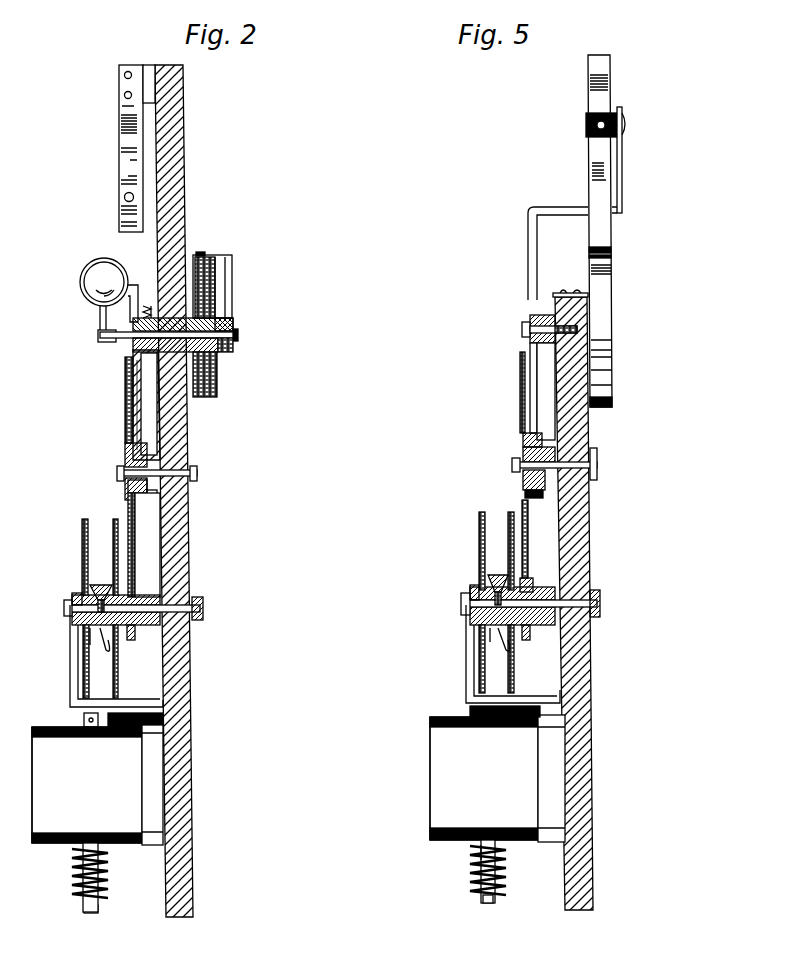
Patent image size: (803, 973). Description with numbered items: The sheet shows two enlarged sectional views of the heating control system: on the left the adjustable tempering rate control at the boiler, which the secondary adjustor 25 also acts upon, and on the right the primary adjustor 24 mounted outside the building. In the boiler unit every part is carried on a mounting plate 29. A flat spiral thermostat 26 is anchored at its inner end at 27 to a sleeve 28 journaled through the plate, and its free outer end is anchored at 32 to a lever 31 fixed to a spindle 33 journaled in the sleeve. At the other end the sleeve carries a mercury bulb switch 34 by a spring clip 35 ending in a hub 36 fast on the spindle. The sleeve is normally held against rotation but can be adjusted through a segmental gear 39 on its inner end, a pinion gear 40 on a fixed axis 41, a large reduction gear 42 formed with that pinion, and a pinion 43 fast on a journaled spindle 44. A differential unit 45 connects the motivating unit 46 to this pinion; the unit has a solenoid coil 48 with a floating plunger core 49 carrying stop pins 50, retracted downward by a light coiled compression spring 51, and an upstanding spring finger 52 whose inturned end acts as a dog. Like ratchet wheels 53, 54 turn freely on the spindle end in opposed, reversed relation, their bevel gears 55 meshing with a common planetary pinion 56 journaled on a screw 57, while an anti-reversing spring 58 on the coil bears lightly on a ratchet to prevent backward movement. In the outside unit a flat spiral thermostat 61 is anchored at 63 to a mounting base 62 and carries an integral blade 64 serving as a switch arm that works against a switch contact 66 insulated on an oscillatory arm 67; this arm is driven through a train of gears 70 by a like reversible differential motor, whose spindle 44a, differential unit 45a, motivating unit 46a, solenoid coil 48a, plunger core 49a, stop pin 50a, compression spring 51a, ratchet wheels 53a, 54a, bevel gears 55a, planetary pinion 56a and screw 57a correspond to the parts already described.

In FIG. 5, the primary adjustor 24 is at (502, 200).
In FIG. 2, the secondary adjustor 25 is at (215, 172).
In FIG. 2, the thermostat 26 is at (218, 383).
In FIG. 2, the inner end anchor 27 is at (218, 358).
In FIG. 2, the sleeve 28 is at (133, 350).
In FIG. 2, the mounting plate 29 is at (185, 720).
In FIG. 2, the lever 31 is at (228, 272).
In FIG. 2, the outer end anchor 32 is at (201, 255).
In FIG. 2, the spindle 33 is at (238, 335).
In FIG. 2, the mercury bulb switch 34 is at (100, 304).
In FIG. 2, the spring clip 35 is at (81, 288).
In FIG. 2, the hub 36 is at (133, 343).
In FIG. 2, the segmental gear 39 is at (137, 386).
In FIG. 2, the pinion gear 40 is at (125, 457).
In FIG. 2, the fixed axis 41 is at (186, 473).
In FIG. 2, the large reduction gear 42 is at (131, 582).
In FIG. 2, the pinion 43 is at (147, 545).
In FIG. 2, the spindle 44 is at (194, 604).
In FIG. 2, the differential unit 45 is at (71, 596).
In FIG. 2, the motivating unit 46 is at (97, 785).
In FIG. 2, the solenoid coil 48 is at (34, 826).
In FIG. 2, the plunger-like core 49 is at (78, 714).
In FIG. 2, the stop pin 50 is at (84, 720).
In FIG. 2, the coiled compression spring 51 is at (76, 872).
In FIG. 2, the spring finger 52 is at (83, 658).
In FIG. 2, the ratchet wheel 53 is at (82, 519).
In FIG. 2, the ratchet wheel 54 is at (116, 519).
In FIG. 2, the bevel gear 55 is at (104, 646).
In FIG. 2, the planetary pinion 56 is at (74, 598).
In FIG. 2, the screw 57 is at (102, 584).
In FIG. 2, the anti-reversing spring 58 is at (78, 684).
In FIG. 5, the thermostat 61 is at (602, 277).
In FIG. 5, the mounting base 62 is at (579, 431).
In FIG. 5, the anchor point 63 is at (563, 292).
In FIG. 5, the blade 64 is at (603, 74).
In FIG. 5, the switch contact 66 is at (588, 128).
In FIG. 5, the oscillatory arm 67 is at (622, 192).
In FIG. 5, the train of gears 70 is at (530, 434).
In FIG. 5, the spindle 44a is at (596, 604).
In FIG. 5, the differential unit 45a is at (470, 630).
In FIG. 5, the motivating unit 46a is at (497, 774).
In FIG. 5, the solenoid coil 48a is at (432, 822).
In FIG. 5, the plunger-like core 49a is at (480, 846).
In FIG. 5, the stop pin 50a is at (490, 905).
In FIG. 5, the coiled compression spring 51a is at (504, 866).
In FIG. 5, the ratchet wheel 53a is at (479, 530).
In FIG. 5, the ratchet wheel 54a is at (509, 513).
In FIG. 5, the bevel gear 55a is at (502, 646).
In FIG. 5, the planetary pinion 56a is at (478, 590).
In FIG. 5, the screw 57a is at (492, 575).